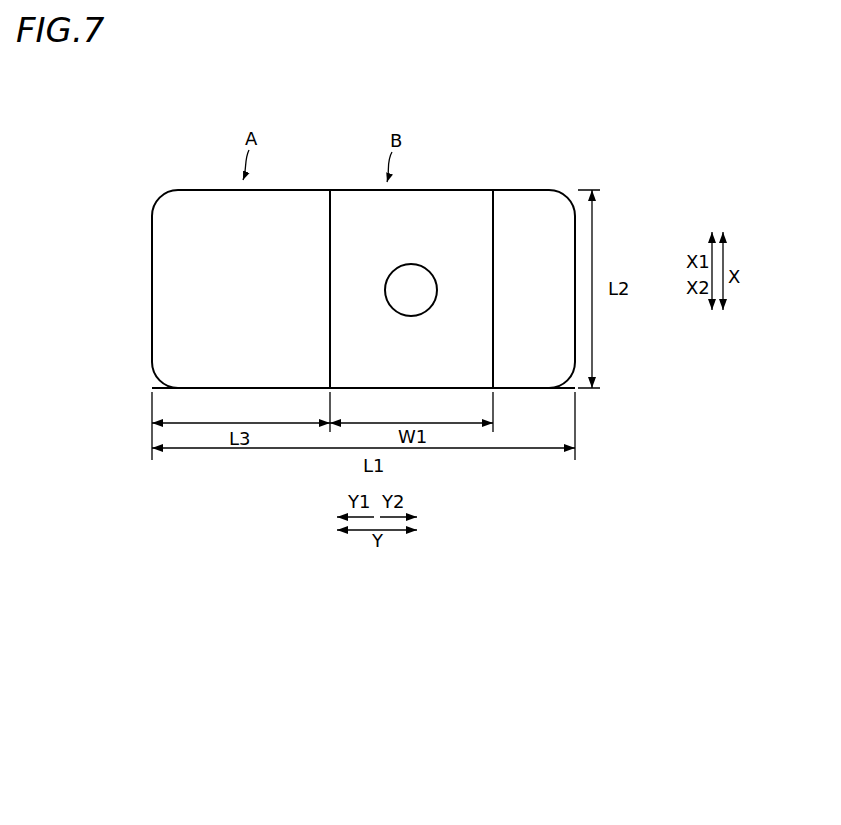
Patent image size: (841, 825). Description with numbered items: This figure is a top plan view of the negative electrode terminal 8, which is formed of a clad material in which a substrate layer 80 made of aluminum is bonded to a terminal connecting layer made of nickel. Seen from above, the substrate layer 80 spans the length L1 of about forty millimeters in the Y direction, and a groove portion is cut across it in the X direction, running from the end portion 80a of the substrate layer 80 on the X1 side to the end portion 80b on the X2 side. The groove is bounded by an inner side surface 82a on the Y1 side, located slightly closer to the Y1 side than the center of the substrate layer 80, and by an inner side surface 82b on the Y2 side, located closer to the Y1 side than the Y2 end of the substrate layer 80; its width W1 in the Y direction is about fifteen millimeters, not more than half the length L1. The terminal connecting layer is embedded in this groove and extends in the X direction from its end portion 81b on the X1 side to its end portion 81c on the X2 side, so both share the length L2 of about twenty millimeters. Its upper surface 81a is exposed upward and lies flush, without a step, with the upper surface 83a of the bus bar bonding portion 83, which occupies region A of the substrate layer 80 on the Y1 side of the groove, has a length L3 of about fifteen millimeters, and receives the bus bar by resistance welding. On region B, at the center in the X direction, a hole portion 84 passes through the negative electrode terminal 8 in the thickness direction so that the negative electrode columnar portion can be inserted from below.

The negative electrode terminal 8 is at (599, 158).
The substrate layer 80 is at (540, 258).
The end portion of the substrate layer on the X1 side 80a is at (218, 190).
The end portion of the substrate layer on the X2 side 80b is at (500, 388).
The upper surface of the terminal connecting layer 81a is at (433, 247).
The end portion of the terminal connecting layer on the X1 side 81b is at (410, 190).
The end portion of the terminal connecting layer on the X2 side 81c is at (420, 388).
The inner side surface of the groove portion on the Y1 side 82a is at (332, 245).
The inner side surface of the groove portion on the Y2 side 82b is at (488, 247).
The bus bar bonding portion 83 is at (190, 226).
The upper surface of the bus bar bonding portion 83a is at (278, 224).
The hole portion 84 is at (390, 278).